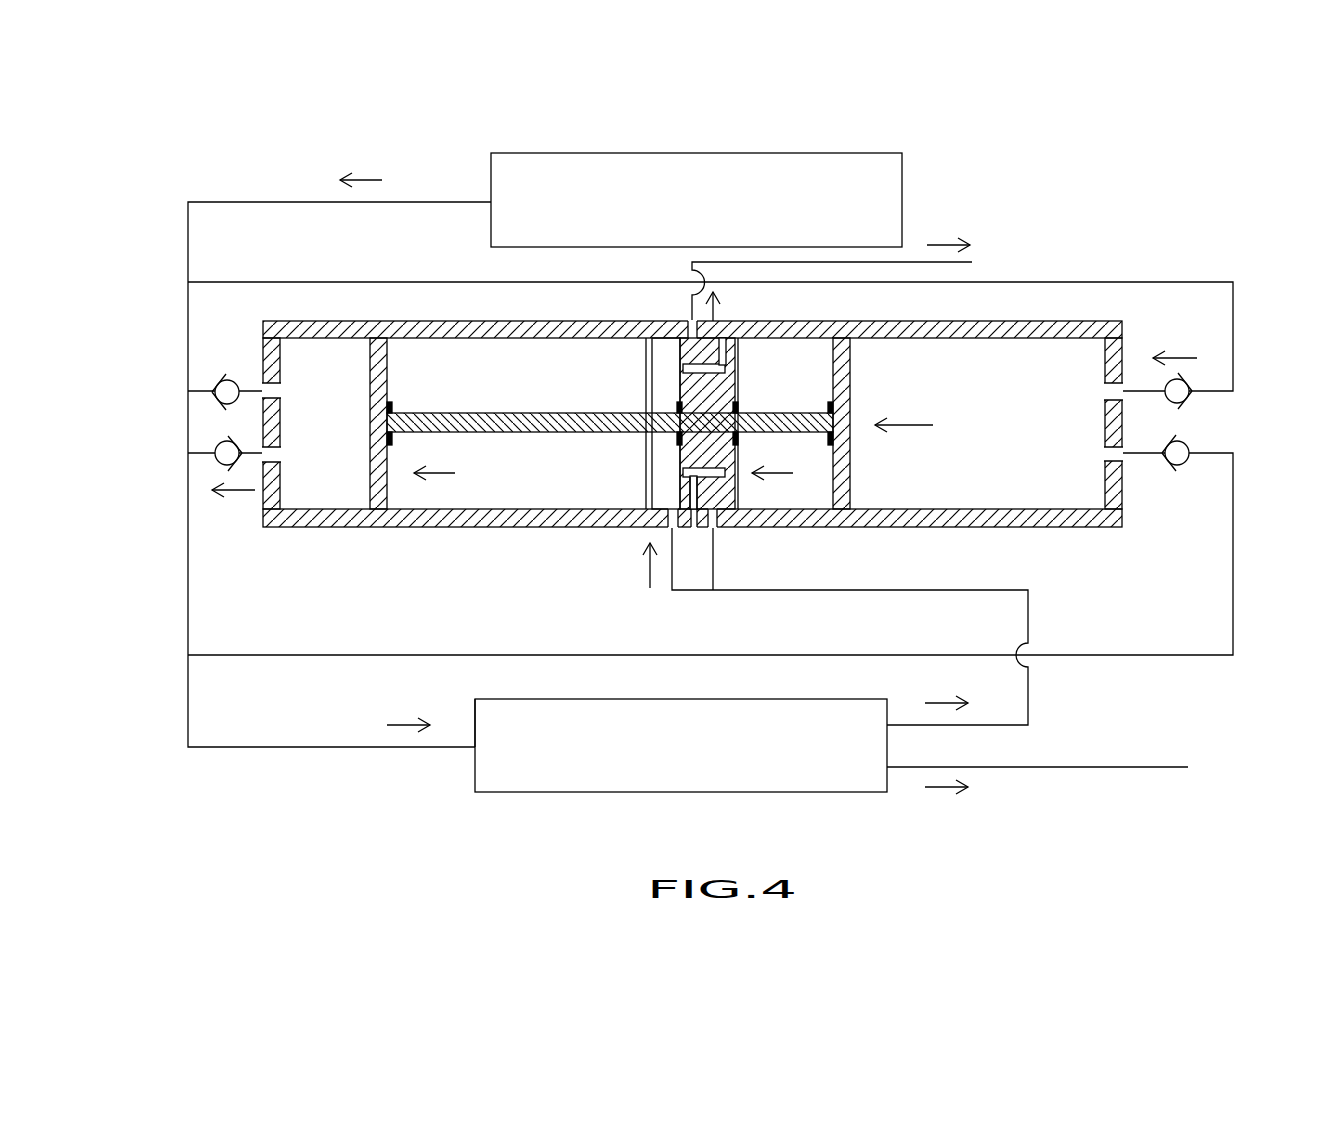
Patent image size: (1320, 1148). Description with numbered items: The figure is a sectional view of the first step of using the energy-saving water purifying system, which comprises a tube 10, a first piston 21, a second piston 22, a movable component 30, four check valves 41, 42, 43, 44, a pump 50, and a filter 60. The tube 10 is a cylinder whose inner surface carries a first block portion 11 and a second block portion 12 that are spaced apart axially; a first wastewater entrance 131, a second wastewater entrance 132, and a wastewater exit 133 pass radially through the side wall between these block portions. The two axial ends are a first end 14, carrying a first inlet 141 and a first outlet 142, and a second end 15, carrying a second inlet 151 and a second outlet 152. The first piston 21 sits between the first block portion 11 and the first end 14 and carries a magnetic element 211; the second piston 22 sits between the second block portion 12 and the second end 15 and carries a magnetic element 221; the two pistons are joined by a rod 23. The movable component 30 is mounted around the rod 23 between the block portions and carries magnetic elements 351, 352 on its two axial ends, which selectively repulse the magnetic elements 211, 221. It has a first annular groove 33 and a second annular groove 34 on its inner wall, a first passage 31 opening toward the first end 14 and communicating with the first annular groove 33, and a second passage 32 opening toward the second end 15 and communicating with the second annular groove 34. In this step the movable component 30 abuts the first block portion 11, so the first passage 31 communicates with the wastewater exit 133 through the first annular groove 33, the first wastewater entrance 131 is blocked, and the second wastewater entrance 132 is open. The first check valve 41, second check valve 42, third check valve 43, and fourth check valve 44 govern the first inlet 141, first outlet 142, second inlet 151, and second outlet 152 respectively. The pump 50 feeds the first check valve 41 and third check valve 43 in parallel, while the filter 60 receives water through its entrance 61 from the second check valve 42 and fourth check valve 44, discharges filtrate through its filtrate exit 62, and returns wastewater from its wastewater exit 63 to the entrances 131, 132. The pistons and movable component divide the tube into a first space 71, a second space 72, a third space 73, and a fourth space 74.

The tube 10 is at (716, 457).
The first block portion 11 is at (716, 457).
The second block portion 12 is at (650, 500).
The first end 14 is at (1206, 419).
The second end 15 is at (202, 432).
The first piston 21 is at (878, 423).
The magnetic element 211 is at (845, 362).
The second piston 22 is at (396, 423).
The magnetic element 221 is at (391, 408).
The rod 23 is at (483, 413).
The movable component 30 is at (696, 452).
The first passage 31 is at (735, 463).
The second passage 32 is at (695, 369).
The first annular groove 33 is at (693, 527).
The second annular groove 34 is at (706, 505).
The first check valve 41 is at (1182, 394).
The second check valve 42 is at (1182, 457).
The third check valve 43 is at (222, 391).
The fourth check valve 44 is at (222, 454).
The pump 50 is at (822, 166).
The filter 60 is at (552, 782).
The entrance 61 is at (475, 747).
The filtrate exit 62 is at (887, 767).
The wastewater exit 63 is at (887, 725).
The first space 71 is at (948, 424).
The second space 72 is at (326, 429).
The third space 73 is at (784, 489).
The fourth space 74 is at (479, 469).
The first wastewater entrance 131 is at (714, 520).
The second wastewater entrance 132 is at (671, 518).
The wastewater exit 133 is at (690, 336).
The first inlet 141 is at (1112, 365).
The first outlet 142 is at (1112, 473).
The second inlet 151 is at (272, 365).
The second outlet 152 is at (273, 492).
The magnetic element 351 is at (740, 408).
The magnetic element 352 is at (678, 408).